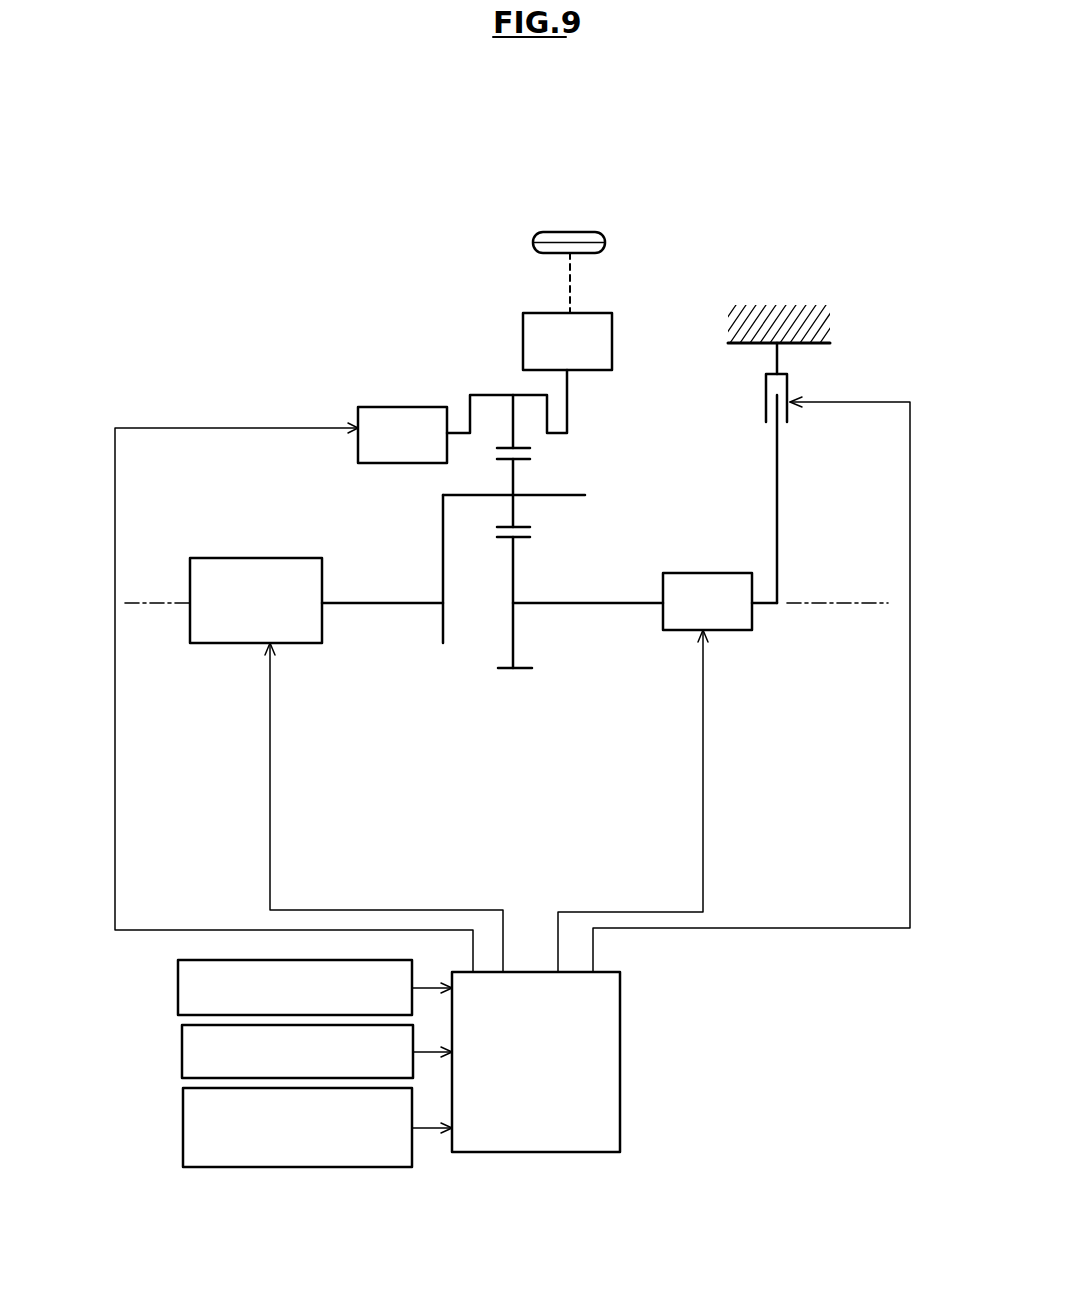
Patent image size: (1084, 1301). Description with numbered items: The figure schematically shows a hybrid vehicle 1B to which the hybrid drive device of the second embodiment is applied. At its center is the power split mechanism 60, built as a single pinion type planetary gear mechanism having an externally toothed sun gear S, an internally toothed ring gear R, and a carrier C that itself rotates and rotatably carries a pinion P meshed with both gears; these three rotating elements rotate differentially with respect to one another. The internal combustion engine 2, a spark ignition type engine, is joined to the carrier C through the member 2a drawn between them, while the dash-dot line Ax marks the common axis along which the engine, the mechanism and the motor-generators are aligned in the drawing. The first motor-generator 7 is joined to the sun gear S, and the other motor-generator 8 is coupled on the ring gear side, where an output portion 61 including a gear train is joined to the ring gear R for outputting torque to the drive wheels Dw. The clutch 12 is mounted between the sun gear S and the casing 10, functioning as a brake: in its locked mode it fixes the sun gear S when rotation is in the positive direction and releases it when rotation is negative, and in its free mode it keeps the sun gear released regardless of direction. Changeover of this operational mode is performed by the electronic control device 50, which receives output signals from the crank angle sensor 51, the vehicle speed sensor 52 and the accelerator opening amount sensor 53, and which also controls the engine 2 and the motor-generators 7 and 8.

The hybrid vehicle 1B is at (471, 168).
The drive wheels Dw is at (570, 232).
The output portion 61 is at (523, 336).
The motor-generator 8 is at (401, 407).
The power split mechanism 60 is at (487, 591).
The ring gear R is at (515, 425).
The pinion P is at (515, 507).
The sun gear S is at (513, 572).
The carrier C is at (443, 530).
The internal combustion engine 2 is at (237, 558).
The engine output shaft 2a is at (405, 607).
The rotation axis Ax is at (167, 607).
The first motor-generator 7 is at (705, 573).
The clutch 12 is at (798, 387).
The casing 10 is at (755, 345).
The electronic control device 50 is at (620, 1027).
The crank angle sensor 51 is at (178, 988).
The vehicle speed sensor 52 is at (182, 1053).
The accelerator opening amount sensor 53 is at (183, 1125).